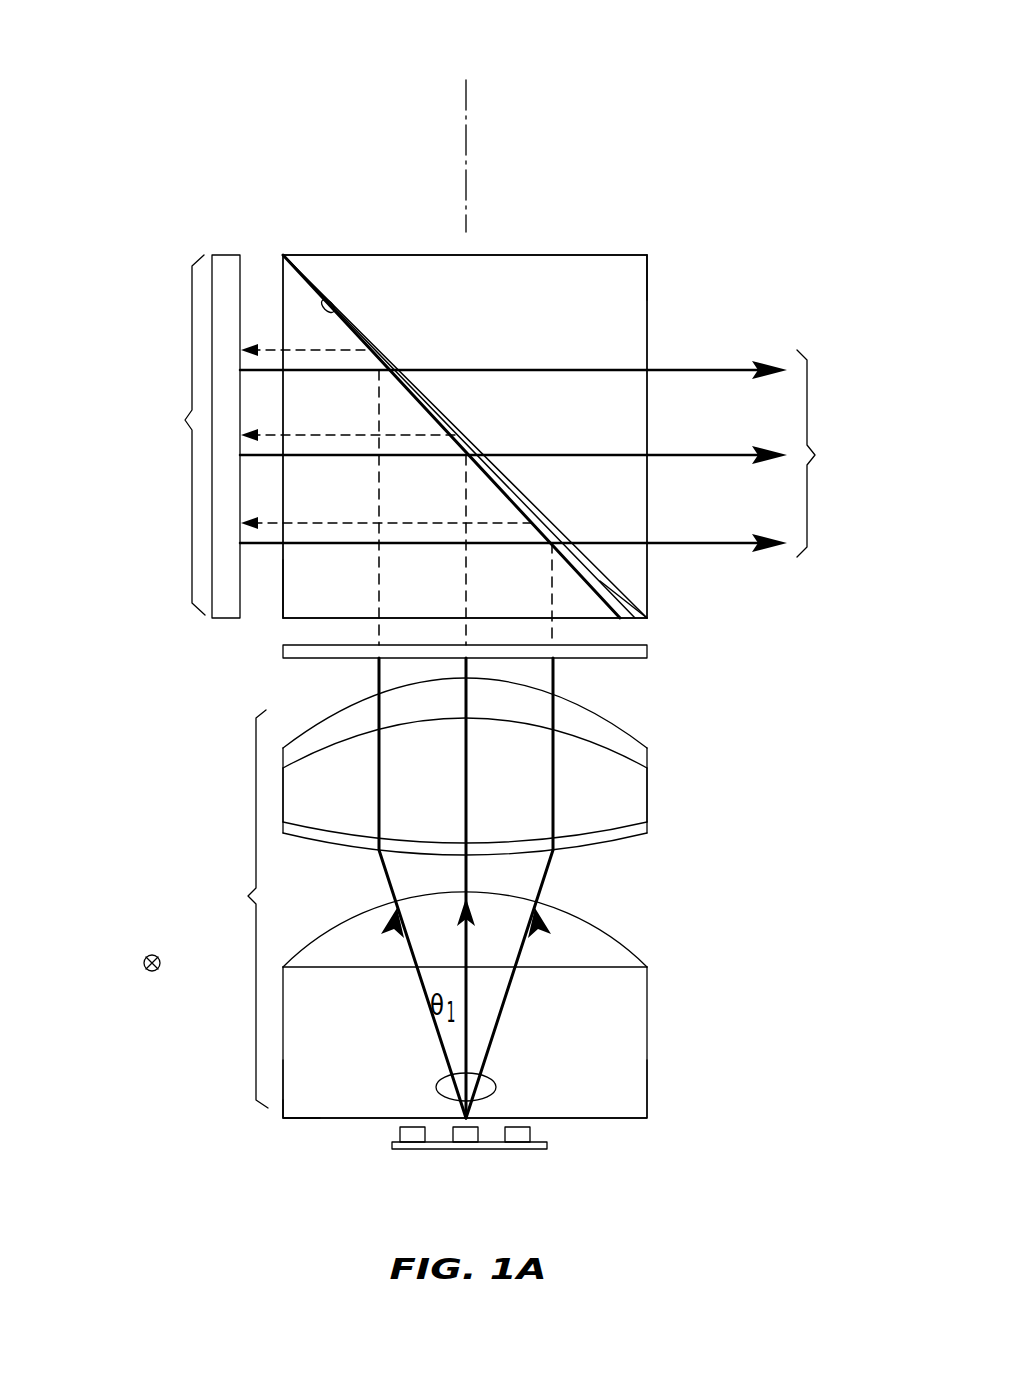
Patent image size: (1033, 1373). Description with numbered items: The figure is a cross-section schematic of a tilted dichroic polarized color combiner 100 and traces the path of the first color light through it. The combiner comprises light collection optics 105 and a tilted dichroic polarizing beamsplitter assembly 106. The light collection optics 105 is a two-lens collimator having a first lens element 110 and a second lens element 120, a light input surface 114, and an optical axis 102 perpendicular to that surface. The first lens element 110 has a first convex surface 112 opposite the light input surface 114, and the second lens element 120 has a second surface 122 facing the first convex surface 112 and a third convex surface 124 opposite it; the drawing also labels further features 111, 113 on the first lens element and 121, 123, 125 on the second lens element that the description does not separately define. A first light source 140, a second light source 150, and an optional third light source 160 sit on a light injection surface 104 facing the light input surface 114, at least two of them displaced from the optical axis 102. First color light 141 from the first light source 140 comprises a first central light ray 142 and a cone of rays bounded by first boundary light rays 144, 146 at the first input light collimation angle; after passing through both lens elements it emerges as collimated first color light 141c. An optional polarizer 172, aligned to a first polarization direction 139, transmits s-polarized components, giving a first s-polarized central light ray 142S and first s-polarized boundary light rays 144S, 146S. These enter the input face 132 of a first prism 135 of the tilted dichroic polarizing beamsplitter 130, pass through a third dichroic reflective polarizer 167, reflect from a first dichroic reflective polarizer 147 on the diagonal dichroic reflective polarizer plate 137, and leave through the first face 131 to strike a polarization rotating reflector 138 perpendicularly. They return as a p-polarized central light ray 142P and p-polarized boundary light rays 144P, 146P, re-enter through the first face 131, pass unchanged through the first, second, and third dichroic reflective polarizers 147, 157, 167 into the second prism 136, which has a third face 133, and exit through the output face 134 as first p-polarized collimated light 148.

The tilted dichroic polarized color combiner 100 is at (125, 45).
The optical axis 102 is at (463, 106).
The light injection surface 104 is at (547, 1145).
The light collection optics 105 is at (233, 909).
The tilted dichroic polarizing beamsplitter assembly 106 is at (168, 435).
The first lens element 110 is at (655, 1030).
The lens body 111 is at (630, 1092).
The first convex surface 112 is at (622, 935).
The planar boundary 113 is at (625, 958).
The light input surface 114 is at (313, 1119).
The second lens element 120 is at (708, 797).
The lower layer 121 is at (640, 830).
The second surface 122 is at (622, 840).
The upper layer 123 is at (625, 742).
The third convex surface 124 is at (612, 722).
The lens body 125 is at (630, 775).
The tilted dichroic polarizing beamsplitter 130 is at (716, 232).
The first face 131 is at (280, 600).
The input face 132 is at (597, 620).
The third face 133 is at (632, 255).
The output face 134 is at (648, 304).
The first prism 135 is at (295, 601).
The second prism 136 is at (638, 262).
The dichroic reflective polarizer plate 137 is at (333, 300).
The polarization rotating reflector 138 is at (229, 255).
The first polarization direction 139 is at (157, 972).
The first light source 140 is at (466, 1149).
The first color light 141 is at (497, 1096).
The collimated first color light 141c is at (565, 675).
The first central light ray 142 is at (468, 998).
The p-polarized central light ray 142P is at (742, 452).
The first s-polarized central light ray 142S is at (465, 602).
The first boundary light ray 144 is at (498, 1037).
The p-polarized boundary light ray 144P is at (742, 540).
The first s-polarized boundary light ray 144S is at (552, 602).
The first boundary light ray 146 is at (433, 1040).
The p-polarized boundary light ray 146P is at (742, 367).
The first s-polarized boundary light ray 146S is at (377, 602).
The first dichroic reflective polarizer 147 is at (635, 603).
The first p-polarized collimated light 148 is at (829, 453).
The second light source 150 is at (519, 1149).
The second dichroic reflective polarizer 157 is at (362, 325).
The optional third light source 160 is at (412, 1149).
The third dichroic reflective polarizer 167 is at (592, 583).
The optional polarizer 172 is at (283, 650).